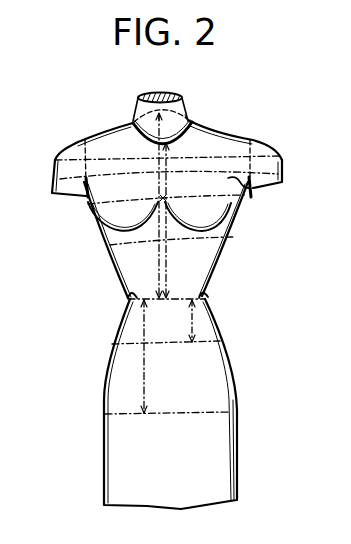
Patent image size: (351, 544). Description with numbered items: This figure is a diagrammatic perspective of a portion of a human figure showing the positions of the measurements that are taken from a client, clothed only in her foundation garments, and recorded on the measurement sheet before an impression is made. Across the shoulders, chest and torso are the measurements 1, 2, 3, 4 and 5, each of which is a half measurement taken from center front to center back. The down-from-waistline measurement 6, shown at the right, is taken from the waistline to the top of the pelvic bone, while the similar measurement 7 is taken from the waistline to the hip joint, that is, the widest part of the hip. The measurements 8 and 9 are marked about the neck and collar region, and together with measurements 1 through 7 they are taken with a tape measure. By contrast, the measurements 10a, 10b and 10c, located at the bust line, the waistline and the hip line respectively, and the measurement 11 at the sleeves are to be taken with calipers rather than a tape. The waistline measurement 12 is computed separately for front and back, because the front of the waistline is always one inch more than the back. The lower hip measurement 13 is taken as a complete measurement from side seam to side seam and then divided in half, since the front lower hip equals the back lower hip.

The measurement 1 is at (212, 157).
The measurement 2 is at (244, 186).
The measurement 3 is at (225, 208).
The measurement 4 is at (205, 242).
The measurement 5 is at (210, 292).
The down-from-waistline measurement 6 is at (193, 322).
The down-from-waistline measurement 7 is at (143, 377).
The measurement 8 is at (140, 130).
The measurement 9 is at (187, 134).
The caliper measurement 10a is at (97, 195).
The caliper measurement 10b is at (158, 302).
The caliper measurement 10c is at (165, 413).
The caliper measurement 11 is at (67, 177).
The waistline measurement 12 is at (127, 292).
The lower hip measurement 13 is at (128, 415).